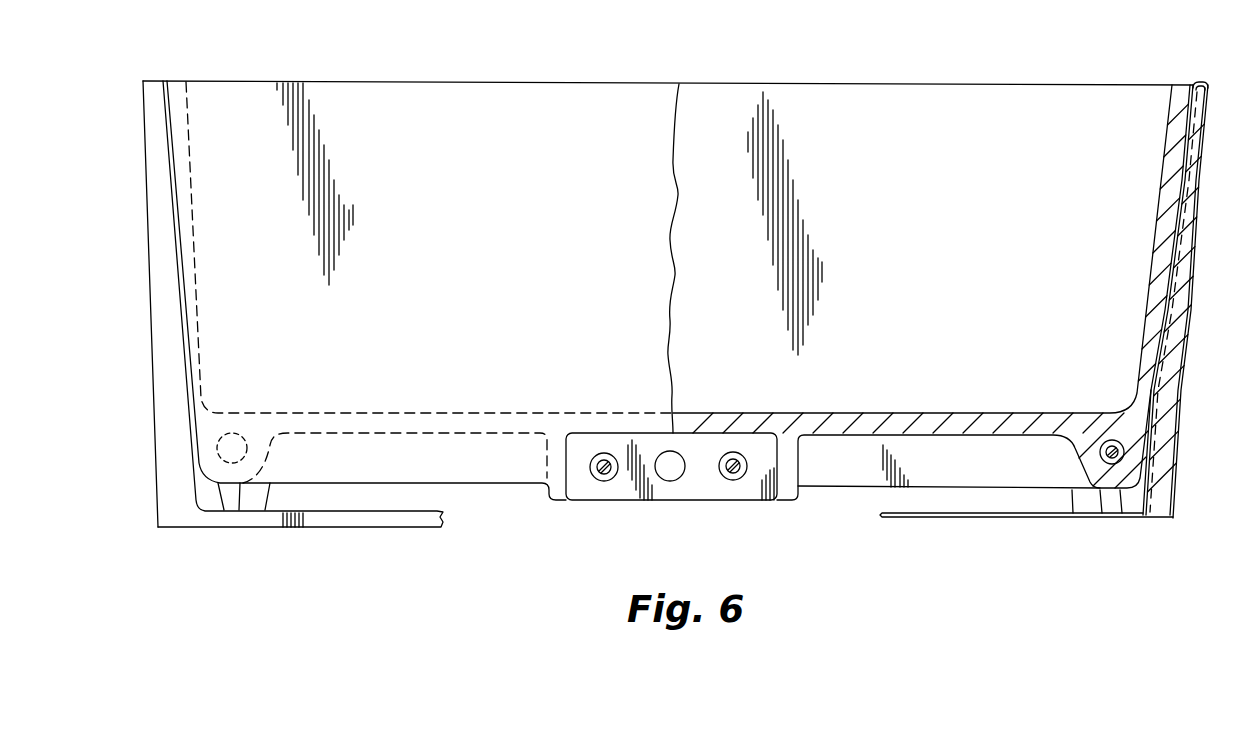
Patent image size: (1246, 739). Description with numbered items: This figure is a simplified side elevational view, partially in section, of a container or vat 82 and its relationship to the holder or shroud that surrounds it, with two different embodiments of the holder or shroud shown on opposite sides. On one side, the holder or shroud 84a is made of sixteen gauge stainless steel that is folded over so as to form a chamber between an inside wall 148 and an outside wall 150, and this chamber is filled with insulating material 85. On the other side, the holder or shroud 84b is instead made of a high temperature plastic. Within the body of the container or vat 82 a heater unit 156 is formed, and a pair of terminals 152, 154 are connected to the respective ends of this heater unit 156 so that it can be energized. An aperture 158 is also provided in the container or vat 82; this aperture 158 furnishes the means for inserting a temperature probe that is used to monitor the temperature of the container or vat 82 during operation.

The container or vat 82 is at (195, 256).
The holder or shroud 84a is at (1207, 103).
The holder or shroud 84b is at (148, 258).
The insulating material 85 is at (1172, 365).
The inside wall 148 is at (1191, 233).
The outside wall 150 is at (1193, 300).
The terminal 152 is at (602, 481).
The terminal 154 is at (729, 481).
The heater unit 156 is at (1111, 440).
The aperture 158 is at (667, 481).